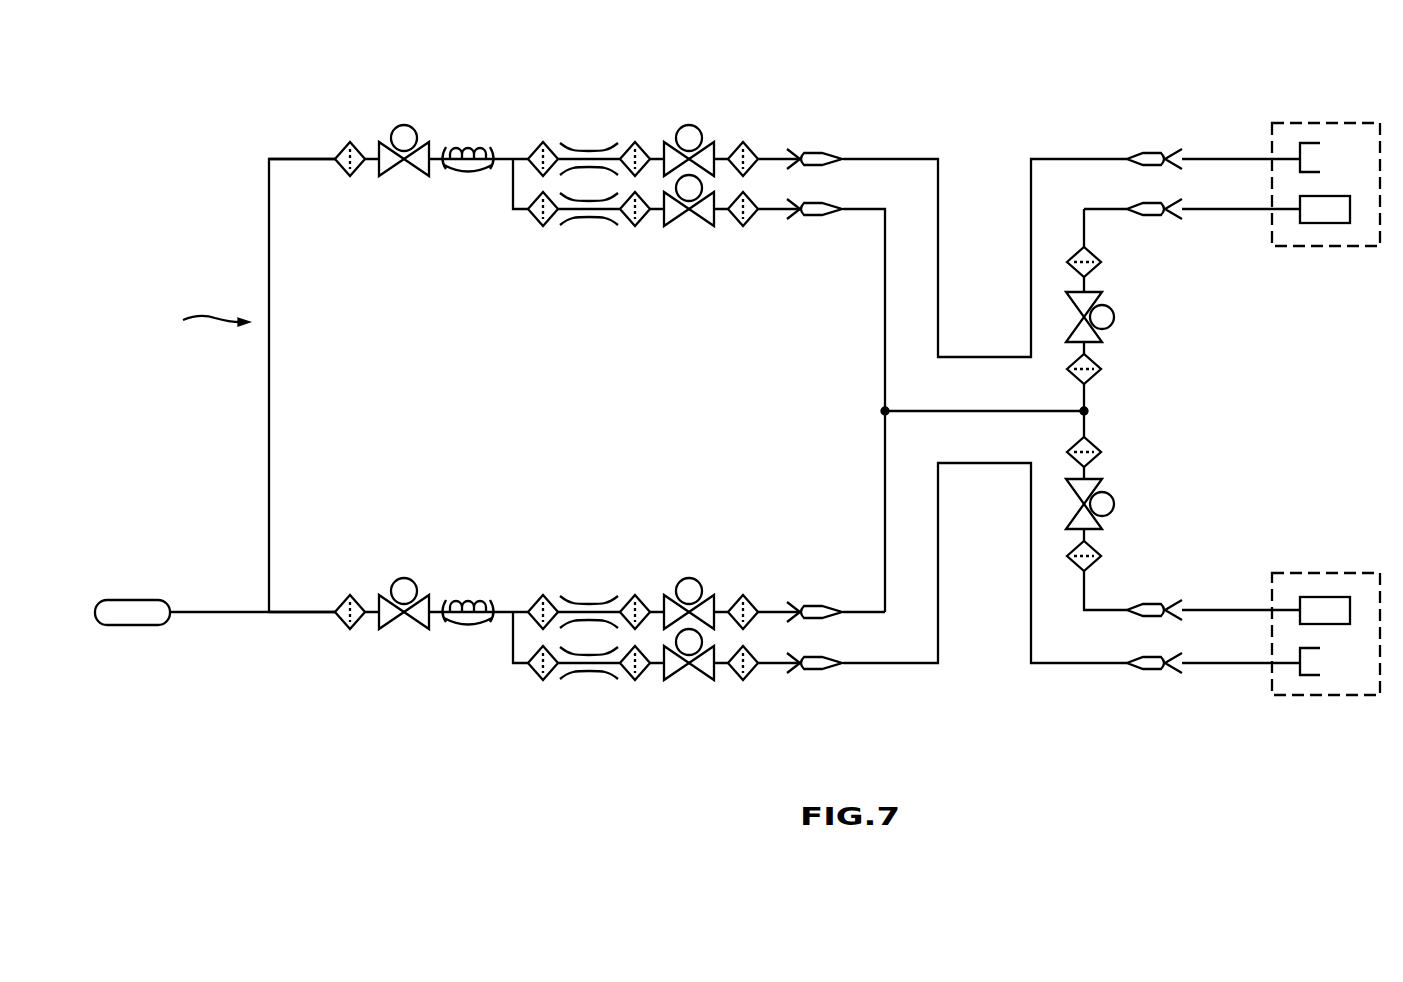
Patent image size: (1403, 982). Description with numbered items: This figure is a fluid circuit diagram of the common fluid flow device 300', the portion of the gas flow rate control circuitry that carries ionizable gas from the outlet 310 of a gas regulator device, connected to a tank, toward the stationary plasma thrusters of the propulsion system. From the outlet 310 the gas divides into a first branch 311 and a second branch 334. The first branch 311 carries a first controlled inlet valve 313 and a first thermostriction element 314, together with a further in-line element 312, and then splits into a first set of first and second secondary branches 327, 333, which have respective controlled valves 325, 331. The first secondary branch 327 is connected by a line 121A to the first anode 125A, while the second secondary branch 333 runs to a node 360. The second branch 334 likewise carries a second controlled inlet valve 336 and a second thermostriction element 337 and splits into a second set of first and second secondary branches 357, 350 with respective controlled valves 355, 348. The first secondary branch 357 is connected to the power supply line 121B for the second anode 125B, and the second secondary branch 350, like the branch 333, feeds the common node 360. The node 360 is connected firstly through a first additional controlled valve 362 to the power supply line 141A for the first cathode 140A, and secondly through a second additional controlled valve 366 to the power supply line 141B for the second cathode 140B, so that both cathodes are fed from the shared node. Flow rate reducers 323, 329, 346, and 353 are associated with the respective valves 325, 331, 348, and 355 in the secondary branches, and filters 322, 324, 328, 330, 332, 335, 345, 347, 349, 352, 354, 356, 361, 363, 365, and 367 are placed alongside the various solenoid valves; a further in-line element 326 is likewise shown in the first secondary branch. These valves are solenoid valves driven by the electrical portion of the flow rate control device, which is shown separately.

The common fluid flow device 300' is at (192, 317).
The outlet of gas regulator device 310 is at (122, 600).
The first branch 311 is at (270, 375).
The filter 312 is at (348, 142).
The first controlled inlet valve 313 is at (405, 125).
The first thermostriction element 314 is at (468, 142).
The filter 322 is at (541, 142).
The flow rate reducer 323 is at (586, 150).
The filter 324 is at (630, 142).
The controlled valve 325 is at (689, 135).
The filter 326 is at (741, 142).
The first secondary branch 327 is at (790, 155).
The filter 328 is at (538, 226).
The flow rate reducer 329 is at (586, 222).
The filter 330 is at (630, 226).
The controlled valve 331 is at (689, 212).
The filter 332 is at (742, 226).
The second secondary branch 333 is at (790, 212).
The second branch 334 is at (290, 614).
The filter 335 is at (348, 595).
The second controlled inlet valve 336 is at (405, 579).
The second thermostriction element 337 is at (468, 595).
The filter 345 is at (541, 595).
The flow rate reducer 346 is at (586, 603).
The filter 347 is at (630, 595).
The controlled valve 348 is at (689, 588).
The filter 349 is at (741, 595).
The second secondary branch 350 is at (790, 608).
The filter 352 is at (538, 680).
The flow rate reducer 353 is at (586, 675).
The filter 354 is at (630, 680).
The controlled valve 355 is at (689, 665).
The filter 356 is at (742, 680).
The first secondary branch 357 is at (790, 665).
The common node 360 is at (1088, 410).
The filter 361 is at (1101, 368).
The first additional controlled valve 362 is at (1115, 314).
The filter 363 is at (1100, 262).
The filter 365 is at (1101, 452).
The second additional controlled valve 366 is at (1115, 503).
The filter 367 is at (1101, 556).
The line 121A is at (1210, 158).
The first anode 125A is at (1318, 142).
The first cathode 140A is at (1323, 218).
The power supply line for the first cathode 141A is at (1207, 212).
The power supply line for the second anode 121B is at (1205, 667).
The second anode 125B is at (1318, 676).
The second cathode 140B is at (1318, 597).
The power supply line for the second cathode 141B is at (1210, 609).